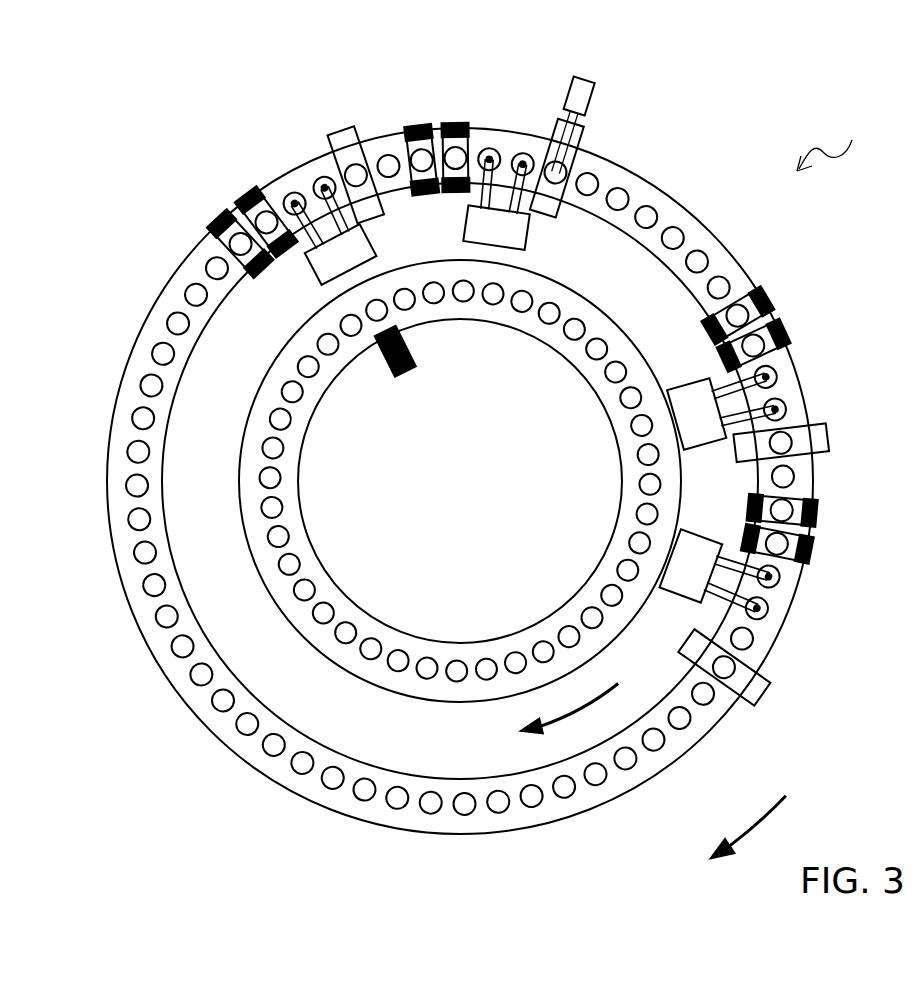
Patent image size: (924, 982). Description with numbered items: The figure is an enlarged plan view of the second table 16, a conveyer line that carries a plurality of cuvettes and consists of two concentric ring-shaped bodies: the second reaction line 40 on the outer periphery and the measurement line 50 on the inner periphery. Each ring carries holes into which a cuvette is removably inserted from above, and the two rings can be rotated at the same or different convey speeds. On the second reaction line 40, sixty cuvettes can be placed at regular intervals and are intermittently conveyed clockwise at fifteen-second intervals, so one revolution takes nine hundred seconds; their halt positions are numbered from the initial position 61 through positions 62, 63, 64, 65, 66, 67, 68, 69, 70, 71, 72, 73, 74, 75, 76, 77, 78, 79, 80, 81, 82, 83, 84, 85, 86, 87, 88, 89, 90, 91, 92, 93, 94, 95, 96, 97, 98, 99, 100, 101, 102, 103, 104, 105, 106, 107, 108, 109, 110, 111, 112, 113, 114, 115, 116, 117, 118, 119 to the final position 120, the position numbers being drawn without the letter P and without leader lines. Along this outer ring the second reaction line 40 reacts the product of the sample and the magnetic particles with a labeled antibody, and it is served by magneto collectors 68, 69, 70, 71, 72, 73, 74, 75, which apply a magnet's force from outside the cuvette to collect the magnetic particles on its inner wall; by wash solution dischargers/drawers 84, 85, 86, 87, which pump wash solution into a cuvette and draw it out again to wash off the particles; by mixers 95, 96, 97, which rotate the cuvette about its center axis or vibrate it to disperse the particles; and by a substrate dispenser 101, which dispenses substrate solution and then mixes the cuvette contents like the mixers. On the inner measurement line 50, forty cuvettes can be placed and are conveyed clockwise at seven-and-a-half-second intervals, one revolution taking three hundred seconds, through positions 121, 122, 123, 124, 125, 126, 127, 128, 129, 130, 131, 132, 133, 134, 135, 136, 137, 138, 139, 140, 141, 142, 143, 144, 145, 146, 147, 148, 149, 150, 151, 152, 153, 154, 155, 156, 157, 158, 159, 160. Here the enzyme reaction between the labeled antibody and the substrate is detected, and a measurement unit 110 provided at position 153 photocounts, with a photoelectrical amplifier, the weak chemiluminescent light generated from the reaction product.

The second table 16 is at (833, 144).
The second reaction line 40 is at (721, 262).
The measurement line 50 is at (468, 703).
The cuvette position 61 is at (766, 299).
The cuvette position 62 is at (784, 332).
The cuvette position 63 is at (798, 367).
The cuvette position 64 is at (808, 403).
The cuvette position 65 is at (815, 439).
The cuvette position 66 is at (817, 476).
The cuvette position 67 is at (816, 512).
The magneto collector 68 is at (705, 327).
The magneto collector 69 is at (722, 354).
The magneto collector 70 is at (749, 500).
The magneto collector 71 is at (745, 530).
The magneto collector 72 is at (261, 277).
The magneto collector 73 is at (286, 255).
The magneto collector 74 is at (424, 194).
The magneto collector 75 is at (456, 193).
The cuvette position 76 is at (642, 787).
The cuvette position 77 is at (609, 805).
The cuvette position 78 is at (574, 819).
The cuvette position 79 is at (538, 829).
The cuvette position 80 is at (501, 836).
The cuvette position 81 is at (464, 838).
The cuvette position 82 is at (429, 837).
The cuvette position 83 is at (391, 831).
The wash solution discharger/drawer 84 is at (687, 404).
The wash solution discharger/drawer 85 is at (690, 553).
The wash solution discharger/drawer 86 is at (342, 272).
The wash solution discharger/drawer 87 is at (512, 246).
The cuvette position 88 is at (225, 750).
The cuvette position 89 is at (198, 723).
The cuvette position 90 is at (174, 694).
The cuvette position 91 is at (153, 663).
The cuvette position 92 is at (135, 630).
The cuvette position 93 is at (122, 595).
The cuvette position 94 is at (111, 559).
The mixer 95 is at (824, 434).
The mixer 96 is at (764, 690).
The mixer 97 is at (338, 138).
The cuvette position 98 is at (109, 412).
The cuvette position 99 is at (118, 376).
The cuvette position 100 is at (130, 339).
The substrate dispenser 101 is at (582, 128).
The cuvette position 102 is at (167, 274).
The cuvette position 103 is at (190, 244).
The cuvette position 104 is at (216, 217).
The cuvette position 105 is at (245, 194).
The cuvette position 106 is at (276, 173).
The cuvette position 107 is at (309, 156).
The cuvette position 108 is at (343, 142).
The cuvette position 109 is at (380, 132).
The measurement unit 110 is at (411, 368).
The cuvette position 111 is at (454, 123).
The cuvette position 112 is at (493, 124).
The cuvette position 113 is at (531, 130).
The cuvette position 114 is at (594, 96).
The cuvette position 115 is at (602, 151).
The cuvette position 116 is at (636, 168).
The cuvette position 117 is at (667, 188).
The cuvette position 118 is at (696, 211).
The cuvette position 119 is at (722, 237).
The cuvette position 120 is at (747, 266).
The cuvette position 121 is at (604, 342).
The cuvette position 122 is at (624, 366).
The cuvette position 123 is at (640, 393).
The cuvette position 124 is at (651, 421).
The cuvette position 125 is at (657, 452).
The cuvette position 126 is at (659, 485).
The cuvette position 127 is at (657, 516).
The cuvette position 128 is at (649, 547).
The cuvette position 129 is at (637, 575).
The cuvette position 130 is at (620, 602).
The cuvette position 131 is at (599, 625).
The cuvette position 132 is at (575, 645).
The cuvette position 133 is at (548, 661).
The cuvette position 134 is at (518, 672).
The cuvette position 135 is at (489, 678).
The cuvette position 136 is at (456, 680).
The cuvette position 137 is at (424, 678).
The cuvette position 138 is at (394, 670).
The cuvette position 139 is at (365, 658).
The cuvette position 140 is at (339, 641).
The cuvette position 141 is at (315, 620).
The cuvette position 142 is at (296, 596).
The cuvette position 143 is at (280, 569).
The cuvette position 144 is at (268, 539).
The cuvette position 145 is at (261, 510).
The cuvette position 146 is at (260, 477).
The cuvette position 147 is at (263, 445).
The cuvette position 148 is at (271, 415).
The cuvette position 149 is at (283, 386).
The cuvette position 150 is at (300, 360).
The cuvette position 151 is at (321, 336).
The cuvette position 152 is at (345, 317).
The cuvette position 153 is at (372, 301).
The cuvette position 154 is at (400, 289).
The cuvette position 155 is at (431, 282).
The cuvette position 156 is at (464, 281).
The cuvette position 157 is at (495, 284).
The cuvette position 158 is at (526, 292).
The cuvette position 159 is at (554, 304).
The cuvette position 160 is at (581, 321).